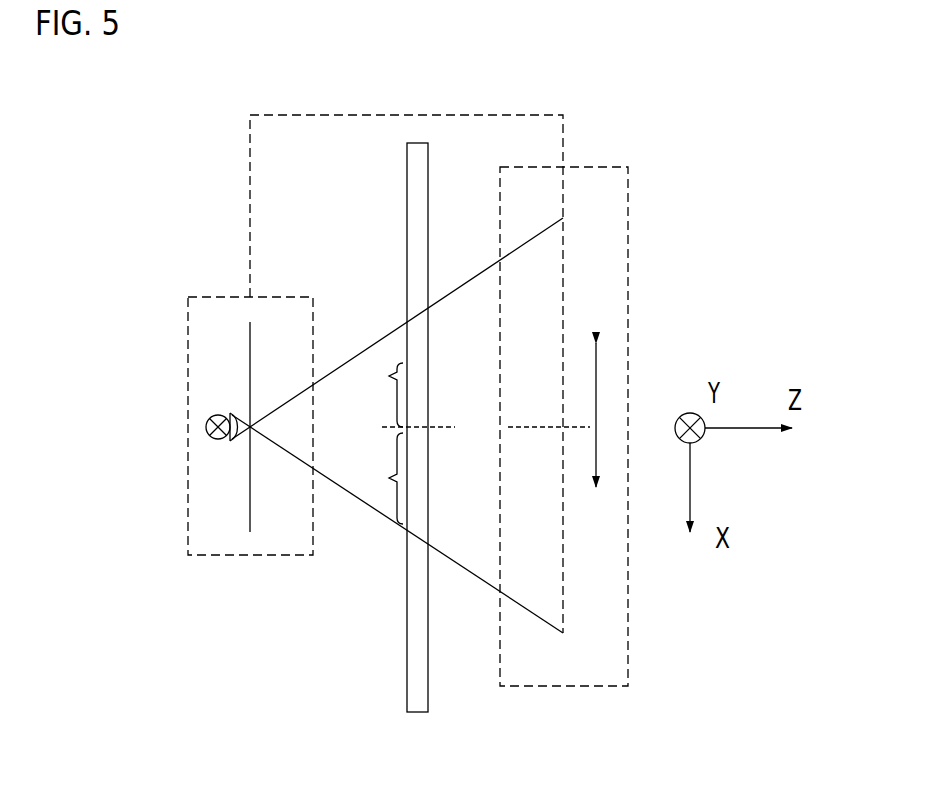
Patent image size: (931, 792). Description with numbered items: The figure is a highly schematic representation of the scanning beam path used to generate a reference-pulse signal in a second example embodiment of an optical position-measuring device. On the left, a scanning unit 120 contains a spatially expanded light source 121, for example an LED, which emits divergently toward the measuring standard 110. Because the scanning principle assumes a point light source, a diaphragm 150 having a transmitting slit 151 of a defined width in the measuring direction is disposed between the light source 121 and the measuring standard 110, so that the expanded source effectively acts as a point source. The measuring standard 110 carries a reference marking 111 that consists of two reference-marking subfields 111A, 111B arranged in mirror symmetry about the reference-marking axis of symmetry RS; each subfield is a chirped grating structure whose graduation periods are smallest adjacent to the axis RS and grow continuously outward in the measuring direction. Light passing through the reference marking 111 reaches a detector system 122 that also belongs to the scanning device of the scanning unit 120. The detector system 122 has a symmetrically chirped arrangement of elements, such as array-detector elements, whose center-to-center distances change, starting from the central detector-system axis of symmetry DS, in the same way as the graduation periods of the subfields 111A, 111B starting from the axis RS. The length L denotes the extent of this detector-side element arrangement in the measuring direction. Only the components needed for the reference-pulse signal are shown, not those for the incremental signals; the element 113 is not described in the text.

The measuring standard 110 is at (380, 682).
The reference marking 111 is at (377, 507).
The reference-marking subfield 111A is at (375, 391).
The reference-marking subfield 111B is at (373, 478).
The light guide plate 113 is at (420, 685).
The scanning unit 120 is at (212, 572).
The light source 121 is at (219, 413).
The detector system 122 is at (565, 259).
The diaphragm 150 is at (252, 348).
The transmitting slit 151 is at (256, 416).
The reference-marking axis of symmetry RS is at (442, 427).
The detector-system axis of symmetry DS is at (540, 427).
The length of the detector-side element arrangement L is at (605, 415).